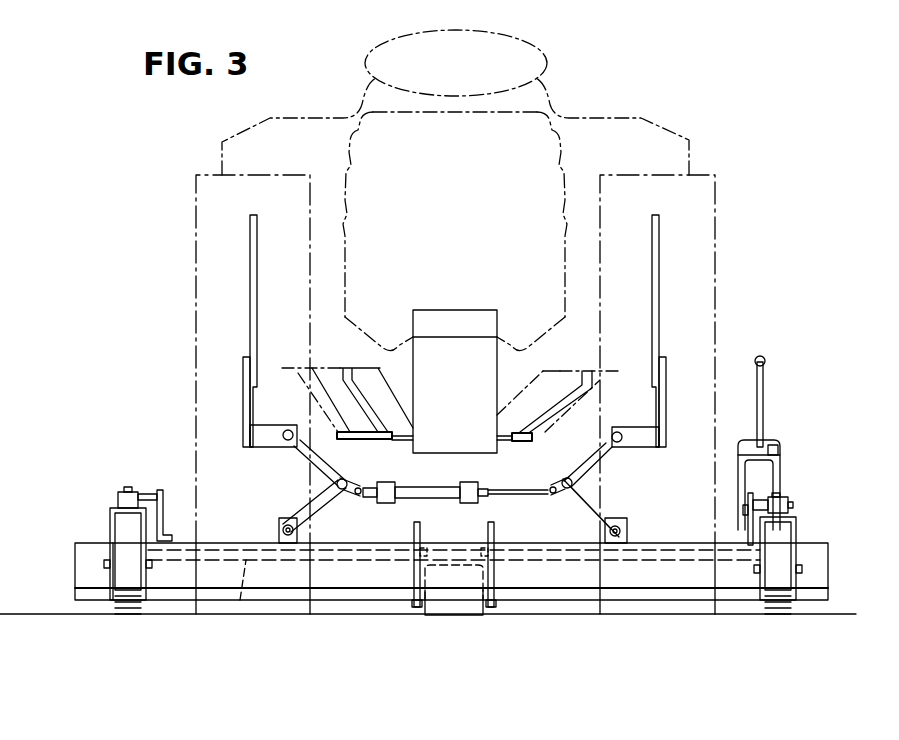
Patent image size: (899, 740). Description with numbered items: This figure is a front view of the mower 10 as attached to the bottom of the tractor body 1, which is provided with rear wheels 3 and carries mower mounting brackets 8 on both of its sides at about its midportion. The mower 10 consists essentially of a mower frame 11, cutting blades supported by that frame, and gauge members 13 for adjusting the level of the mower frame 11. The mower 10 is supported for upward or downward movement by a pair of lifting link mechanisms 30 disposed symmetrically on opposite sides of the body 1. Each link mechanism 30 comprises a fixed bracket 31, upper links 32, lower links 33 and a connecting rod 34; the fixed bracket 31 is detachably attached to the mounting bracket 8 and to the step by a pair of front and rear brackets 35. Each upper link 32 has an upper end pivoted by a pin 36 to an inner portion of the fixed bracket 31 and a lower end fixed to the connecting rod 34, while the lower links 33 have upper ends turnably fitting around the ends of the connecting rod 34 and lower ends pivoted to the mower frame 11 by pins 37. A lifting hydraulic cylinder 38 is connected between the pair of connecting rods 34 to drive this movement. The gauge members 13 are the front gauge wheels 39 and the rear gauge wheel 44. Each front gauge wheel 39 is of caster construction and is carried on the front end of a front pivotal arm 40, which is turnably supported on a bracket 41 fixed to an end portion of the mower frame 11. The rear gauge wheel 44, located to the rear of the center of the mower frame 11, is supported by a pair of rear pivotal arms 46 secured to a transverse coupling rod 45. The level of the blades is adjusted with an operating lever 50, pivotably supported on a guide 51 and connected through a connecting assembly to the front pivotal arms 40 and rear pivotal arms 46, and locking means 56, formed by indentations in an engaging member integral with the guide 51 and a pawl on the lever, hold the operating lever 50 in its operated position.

The body 1 is at (441, 310).
The rear wheels 3 is at (196, 316).
The mower mounting brackets 8 is at (253, 268).
The mower 10 is at (372, 603).
The mower frame 11 is at (515, 582).
The gauge members 13 is at (120, 616).
The lifting link mechanisms 30 is at (300, 478).
The fixed bracket 31 is at (280, 447).
The upper links 32 is at (320, 460).
The lower links 33 is at (322, 504).
The connecting rod 34 is at (352, 483).
The front and rear brackets 35 is at (246, 403).
The pin 36 is at (288, 430).
The pins 37 is at (281, 525).
The lifting hydraulic cylinder 38 is at (432, 487).
The front gauge wheels 39 is at (130, 611).
The front pivotal arm 40 is at (126, 494).
The bracket 41 is at (160, 515).
The rear gauge wheel 44 is at (478, 616).
The coupling rod 45 is at (240, 602).
The rear pivotal arms 46 is at (488, 530).
The operating lever 50 is at (763, 392).
The guide 51 is at (781, 456).
The locking means 56 is at (774, 436).